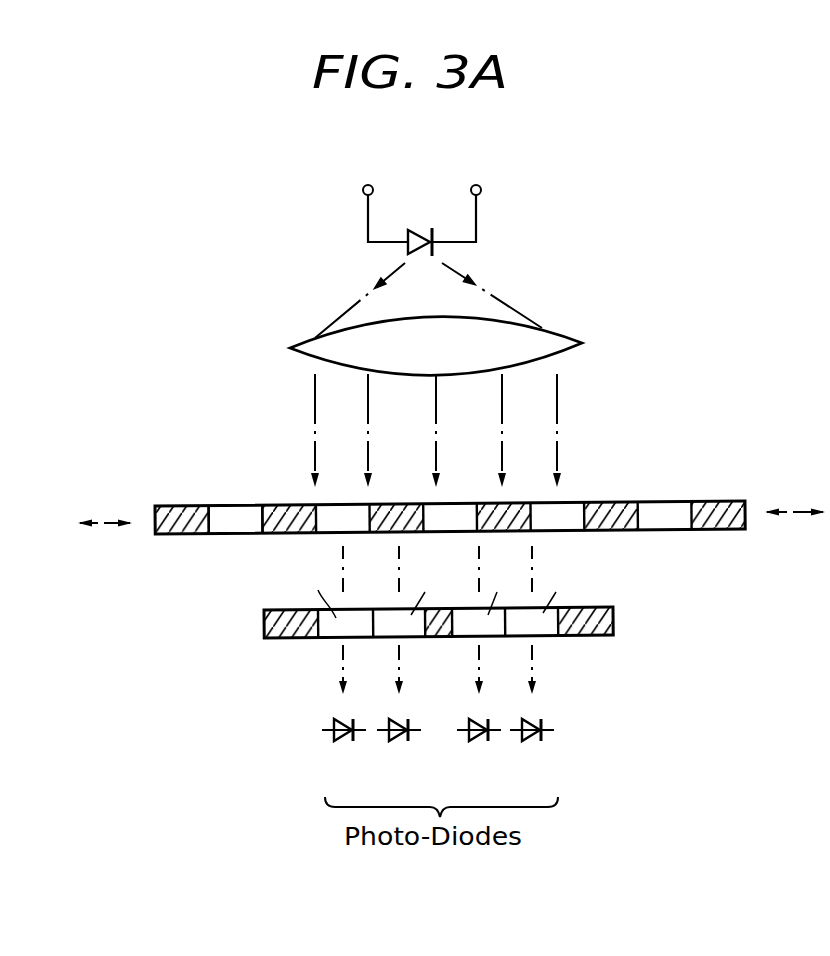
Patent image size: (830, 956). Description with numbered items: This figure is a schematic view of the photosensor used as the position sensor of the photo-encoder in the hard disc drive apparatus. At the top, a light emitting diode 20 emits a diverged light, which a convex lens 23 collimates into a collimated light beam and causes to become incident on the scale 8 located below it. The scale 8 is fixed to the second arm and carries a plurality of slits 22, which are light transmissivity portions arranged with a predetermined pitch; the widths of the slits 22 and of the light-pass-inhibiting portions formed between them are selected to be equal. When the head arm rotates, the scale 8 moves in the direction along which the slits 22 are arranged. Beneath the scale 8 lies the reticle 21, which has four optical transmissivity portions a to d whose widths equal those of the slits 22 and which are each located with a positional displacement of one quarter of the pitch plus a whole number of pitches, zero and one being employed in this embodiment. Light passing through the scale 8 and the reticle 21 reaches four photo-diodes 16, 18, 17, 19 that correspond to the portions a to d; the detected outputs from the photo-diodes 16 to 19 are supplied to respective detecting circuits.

The light emitting diode 20 is at (425, 228).
The convex lens 23 is at (576, 342).
The scale 8 is at (712, 501).
The slits 22 is at (220, 506).
The reticle 21 is at (594, 638).
The photo-diode 16 is at (342, 744).
The photo-diode 17 is at (477, 744).
The photo-diode 18 is at (397, 744).
The photo-diode 19 is at (530, 744).